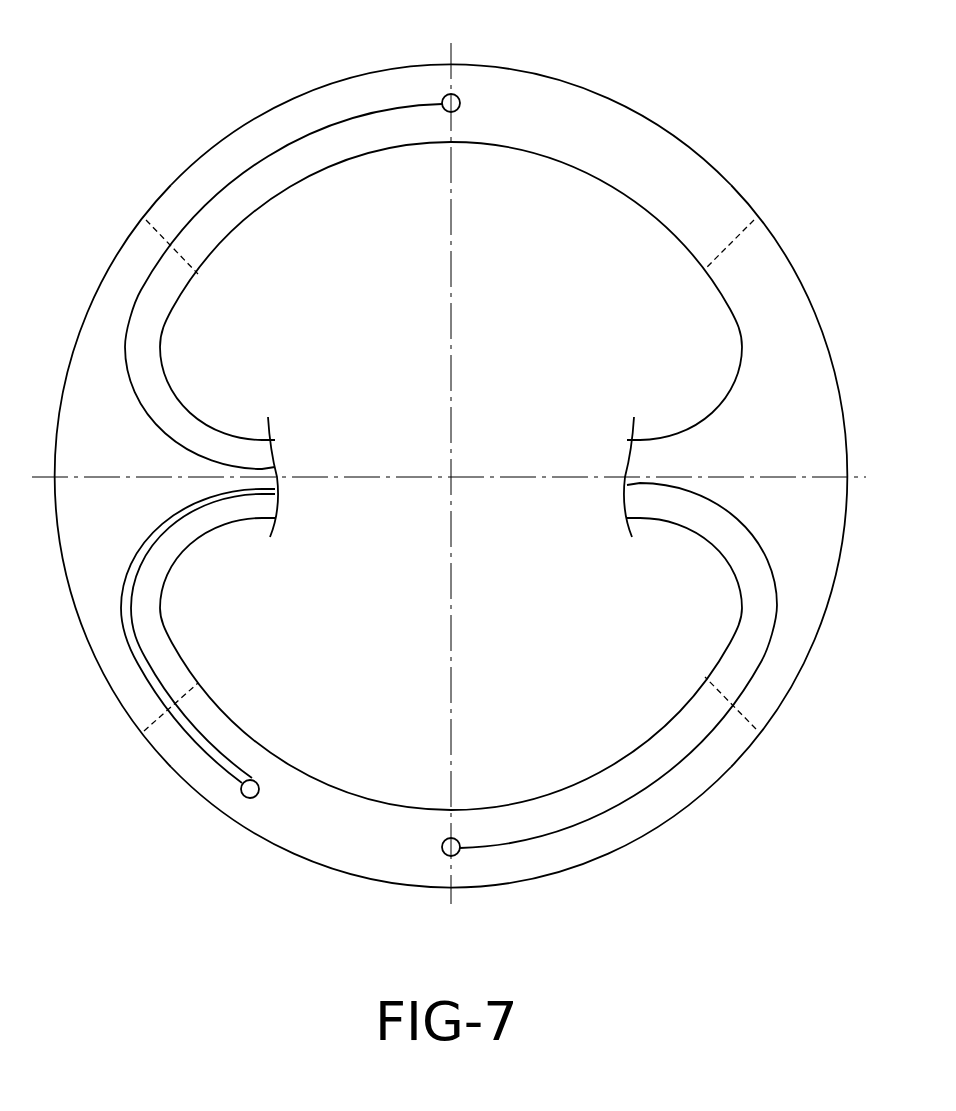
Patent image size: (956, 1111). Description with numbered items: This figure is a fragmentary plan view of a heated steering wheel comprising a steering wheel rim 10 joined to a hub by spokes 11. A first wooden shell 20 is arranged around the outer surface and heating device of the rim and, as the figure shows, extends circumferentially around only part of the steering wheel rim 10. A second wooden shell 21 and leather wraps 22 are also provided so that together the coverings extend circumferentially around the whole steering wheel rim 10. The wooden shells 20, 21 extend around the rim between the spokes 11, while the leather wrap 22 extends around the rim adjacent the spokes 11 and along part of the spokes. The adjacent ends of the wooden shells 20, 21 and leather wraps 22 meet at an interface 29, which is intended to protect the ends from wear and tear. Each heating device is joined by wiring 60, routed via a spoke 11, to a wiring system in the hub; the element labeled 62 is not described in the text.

The steering wheel rim 10 is at (289, 104).
The spokes 11 is at (215, 432).
The wooden shell 20 is at (646, 106).
The second wooden shell 21 is at (306, 871).
The leather wrap 22 is at (93, 277).
The interface 29 is at (161, 218).
The wiring 60 is at (293, 143).
The slot 62 is at (257, 781).